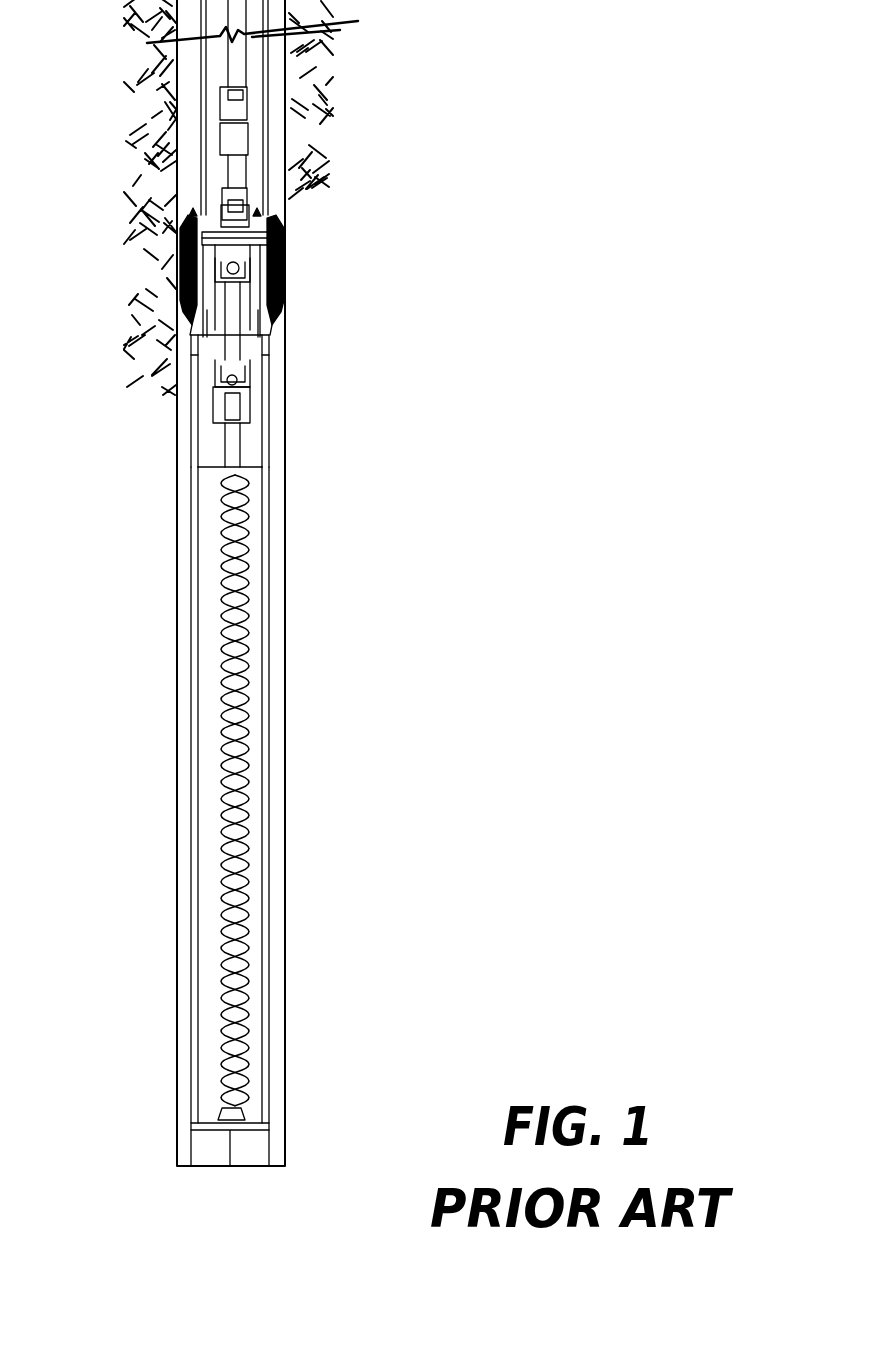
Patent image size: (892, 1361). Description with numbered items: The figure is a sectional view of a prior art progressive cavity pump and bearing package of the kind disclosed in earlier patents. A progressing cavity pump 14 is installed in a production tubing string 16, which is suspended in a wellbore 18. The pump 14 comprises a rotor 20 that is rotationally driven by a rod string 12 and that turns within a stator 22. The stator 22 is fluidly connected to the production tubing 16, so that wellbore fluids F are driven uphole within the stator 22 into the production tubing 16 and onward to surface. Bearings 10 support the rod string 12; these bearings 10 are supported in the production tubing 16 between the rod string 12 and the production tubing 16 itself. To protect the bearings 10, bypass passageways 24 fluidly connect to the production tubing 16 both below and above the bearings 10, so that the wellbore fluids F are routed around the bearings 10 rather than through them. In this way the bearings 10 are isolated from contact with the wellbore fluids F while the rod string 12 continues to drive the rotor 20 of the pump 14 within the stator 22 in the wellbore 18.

The bearings 10 is at (290, 222).
The rod string 12 is at (249, 68).
The progressing cavity pump 14 is at (385, 636).
The production tubing string 16 is at (270, 388).
The wellbore 18 is at (275, 492).
The rotor 20 is at (232, 584).
The stator 22 is at (210, 625).
The bypass passageways 24 is at (285, 258).
The wellbore fluids F is at (262, 210).